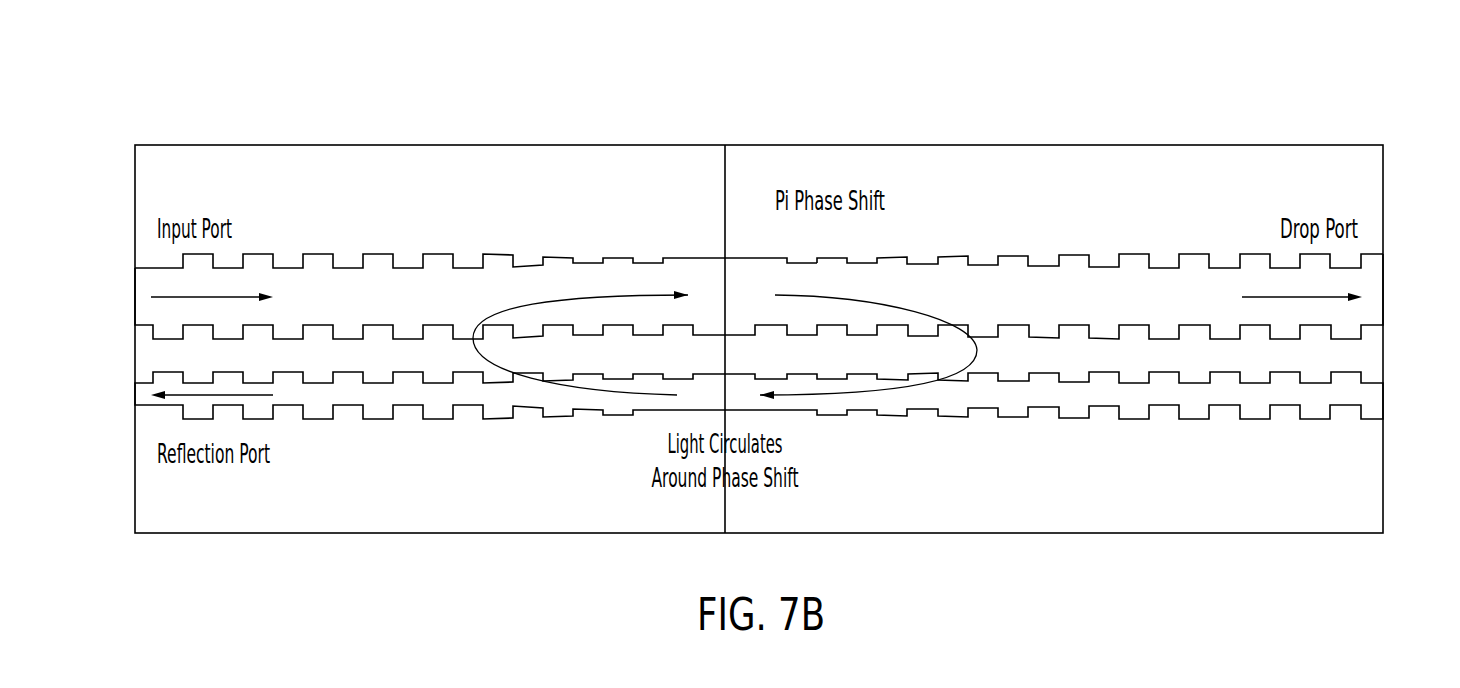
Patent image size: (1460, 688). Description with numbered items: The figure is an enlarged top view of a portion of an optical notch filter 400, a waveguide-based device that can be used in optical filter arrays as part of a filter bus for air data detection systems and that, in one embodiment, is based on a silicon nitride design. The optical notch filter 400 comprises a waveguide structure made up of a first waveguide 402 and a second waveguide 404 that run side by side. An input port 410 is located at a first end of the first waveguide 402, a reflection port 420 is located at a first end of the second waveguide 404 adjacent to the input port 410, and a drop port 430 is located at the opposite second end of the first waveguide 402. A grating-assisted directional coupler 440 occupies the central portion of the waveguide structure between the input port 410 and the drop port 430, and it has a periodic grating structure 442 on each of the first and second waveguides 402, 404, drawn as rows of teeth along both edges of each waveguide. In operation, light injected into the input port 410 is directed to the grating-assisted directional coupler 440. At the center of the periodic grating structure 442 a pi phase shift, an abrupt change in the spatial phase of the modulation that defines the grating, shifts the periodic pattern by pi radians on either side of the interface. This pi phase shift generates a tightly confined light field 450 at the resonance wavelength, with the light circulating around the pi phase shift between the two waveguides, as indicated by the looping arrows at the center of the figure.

The optical notch filter 400 is at (362, 112).
The first waveguide 402 is at (759, 213).
The second waveguide 404 is at (350, 420).
The input port 410 is at (135, 289).
The reflection port 420 is at (135, 403).
The drop port 430 is at (1383, 276).
The grating-assisted directional coupler 440 is at (500, 235).
The periodic grating structure 442 is at (1077, 254).
The tightly confined light field 450 is at (978, 350).